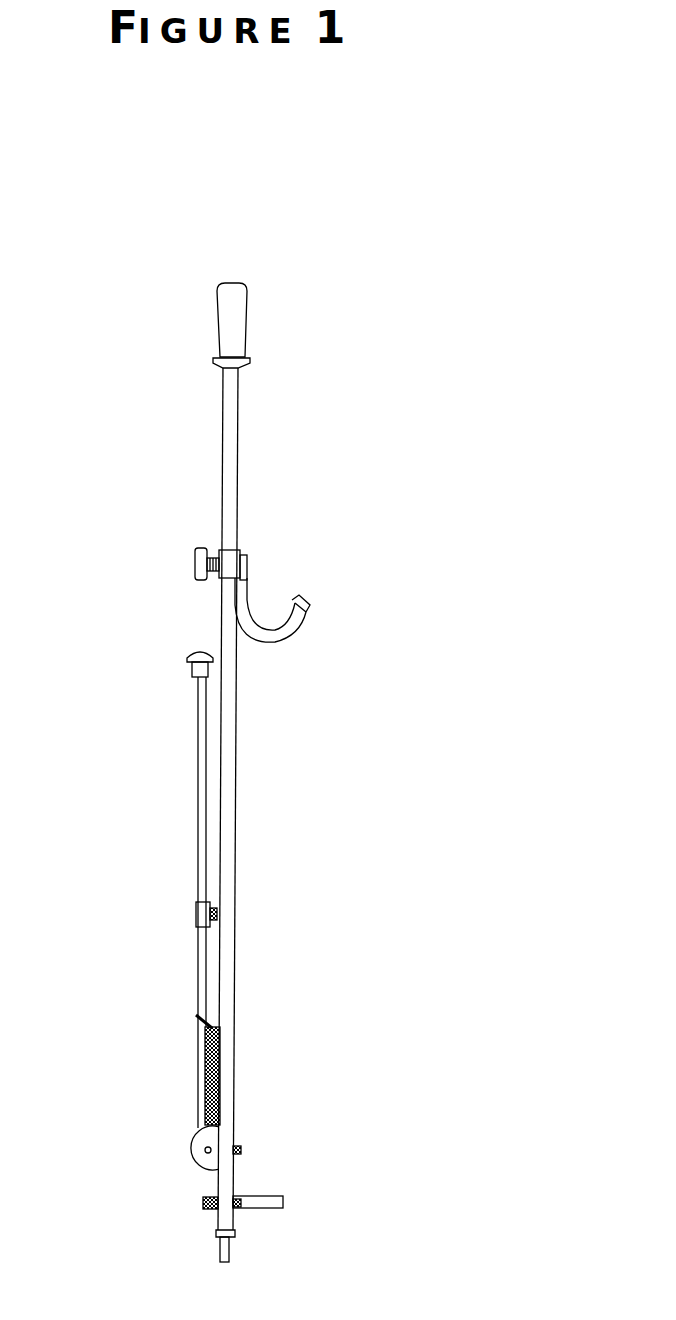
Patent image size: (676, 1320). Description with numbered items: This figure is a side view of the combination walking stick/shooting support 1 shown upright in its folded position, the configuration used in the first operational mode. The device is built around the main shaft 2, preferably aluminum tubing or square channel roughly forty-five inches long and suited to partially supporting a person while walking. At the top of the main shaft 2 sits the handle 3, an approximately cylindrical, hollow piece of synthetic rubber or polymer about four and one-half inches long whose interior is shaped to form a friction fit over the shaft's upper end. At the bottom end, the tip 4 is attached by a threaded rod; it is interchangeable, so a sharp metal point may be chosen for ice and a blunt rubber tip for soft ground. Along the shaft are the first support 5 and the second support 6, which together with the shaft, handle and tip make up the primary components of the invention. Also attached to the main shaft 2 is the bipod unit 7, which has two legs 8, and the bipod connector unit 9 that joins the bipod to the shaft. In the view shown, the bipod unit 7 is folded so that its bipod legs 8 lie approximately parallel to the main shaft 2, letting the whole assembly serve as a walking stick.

The combination walking stick/shooting support 1 is at (200, 442).
The main shaft 2 is at (228, 497).
The handle 3 is at (240, 307).
The tip 4 is at (220, 1252).
The first support 5 is at (284, 623).
The second support 6 is at (283, 1200).
The bipod unit 7 is at (190, 1148).
The bipod legs 8 is at (205, 848).
The bipod connector unit 9 is at (241, 1150).